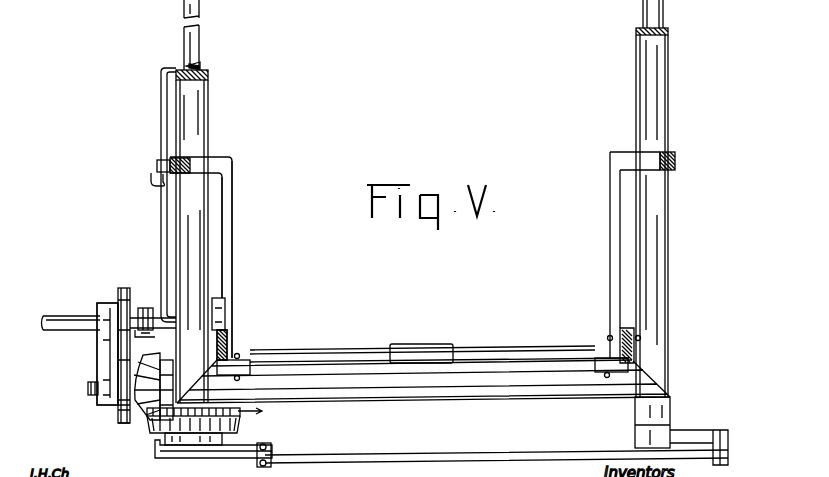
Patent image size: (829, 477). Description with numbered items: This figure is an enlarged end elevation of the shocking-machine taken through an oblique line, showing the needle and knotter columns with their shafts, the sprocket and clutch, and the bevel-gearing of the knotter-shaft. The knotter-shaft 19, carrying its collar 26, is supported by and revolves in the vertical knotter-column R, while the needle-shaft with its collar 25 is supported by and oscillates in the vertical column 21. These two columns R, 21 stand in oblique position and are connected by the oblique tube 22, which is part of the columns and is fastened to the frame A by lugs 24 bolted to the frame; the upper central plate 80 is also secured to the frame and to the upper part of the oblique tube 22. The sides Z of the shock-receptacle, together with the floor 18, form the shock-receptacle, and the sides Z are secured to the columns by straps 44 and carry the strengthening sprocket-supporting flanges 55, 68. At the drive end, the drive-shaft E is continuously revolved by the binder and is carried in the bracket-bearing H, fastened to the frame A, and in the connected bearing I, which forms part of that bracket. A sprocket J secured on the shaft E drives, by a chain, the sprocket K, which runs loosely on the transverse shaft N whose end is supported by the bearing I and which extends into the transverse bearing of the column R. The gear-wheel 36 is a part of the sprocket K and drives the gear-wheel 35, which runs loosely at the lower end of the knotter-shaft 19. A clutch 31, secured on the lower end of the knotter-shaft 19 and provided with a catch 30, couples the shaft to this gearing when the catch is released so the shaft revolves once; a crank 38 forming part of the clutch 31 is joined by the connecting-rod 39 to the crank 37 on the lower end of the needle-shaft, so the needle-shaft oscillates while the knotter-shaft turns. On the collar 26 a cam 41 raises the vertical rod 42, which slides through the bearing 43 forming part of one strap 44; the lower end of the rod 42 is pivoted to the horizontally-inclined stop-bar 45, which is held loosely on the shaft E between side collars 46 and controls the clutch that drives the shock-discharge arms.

The knotter-shaft 19 is at (177, 35).
The cam 41 is at (203, 67).
The collar 26 is at (210, 74).
The vertical rod 42 is at (161, 99).
The knotter-column R is at (206, 116).
The flange 55 is at (214, 165).
The strap 44 is at (168, 159).
The bearing 43 is at (157, 165).
The side Z is at (232, 189).
The bracket-bearing H is at (108, 303).
The drive-shaft E is at (45, 323).
The bearing I is at (97, 359).
The sprocket J is at (127, 286).
The shaft N is at (88, 390).
The stop-bar 45 is at (143, 308).
The side collar 46 is at (141, 335).
The sprocket K is at (135, 420).
The gear-wheel 36 is at (125, 410).
The gear-wheel 35 is at (243, 427).
The catch 30 is at (157, 450).
The clutch 31 is at (210, 458).
The crank 38 is at (260, 466).
The connecting-rod 39 is at (496, 463).
The oblique tube 22 is at (475, 385).
The floor 18 is at (328, 351).
The upper central plate 80 is at (420, 346).
The lug 24 is at (250, 373).
The frame A is at (238, 358).
The collar 25 is at (668, 31).
The needle column 21 is at (657, 94).
The flange 68 is at (632, 160).
The crank 37 is at (703, 432).